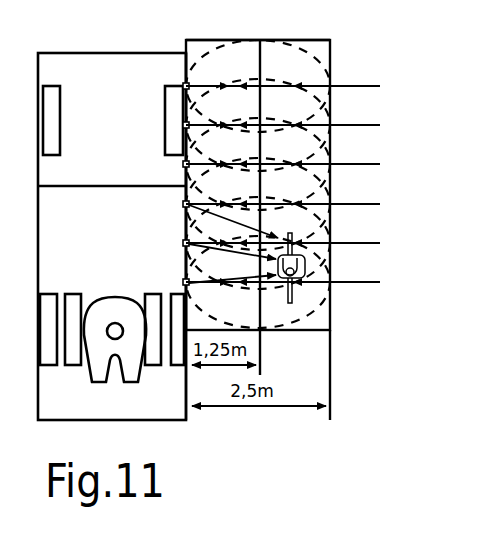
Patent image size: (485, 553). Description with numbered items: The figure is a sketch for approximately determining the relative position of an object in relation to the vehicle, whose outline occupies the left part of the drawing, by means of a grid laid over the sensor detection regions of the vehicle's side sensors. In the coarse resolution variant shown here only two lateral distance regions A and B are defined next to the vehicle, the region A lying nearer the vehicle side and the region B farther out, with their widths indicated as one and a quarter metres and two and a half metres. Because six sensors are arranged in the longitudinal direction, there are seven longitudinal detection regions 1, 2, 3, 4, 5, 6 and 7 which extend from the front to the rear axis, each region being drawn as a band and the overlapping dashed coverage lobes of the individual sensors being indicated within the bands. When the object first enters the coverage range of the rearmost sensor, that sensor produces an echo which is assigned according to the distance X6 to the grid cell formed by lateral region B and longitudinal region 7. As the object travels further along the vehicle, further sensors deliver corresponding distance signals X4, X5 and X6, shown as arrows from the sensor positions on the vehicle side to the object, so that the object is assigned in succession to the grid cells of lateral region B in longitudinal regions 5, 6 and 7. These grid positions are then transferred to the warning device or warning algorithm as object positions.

The longitudinal detection region 1 is at (284, 71).
The longitudinal detection region 2 is at (284, 110).
The longitudinal detection region 3 is at (284, 149).
The longitudinal detection region 4 is at (284, 189).
The longitudinal detection region 5 is at (284, 228).
The longitudinal detection region 6 is at (284, 267).
The longitudinal detection region 7 is at (284, 312).
The lateral distance region A is at (223, 23).
The lateral distance region B is at (295, 23).
The distance signal X4 is at (242, 221).
The distance signal X5 is at (232, 259).
The distance signal X6 is at (232, 288).